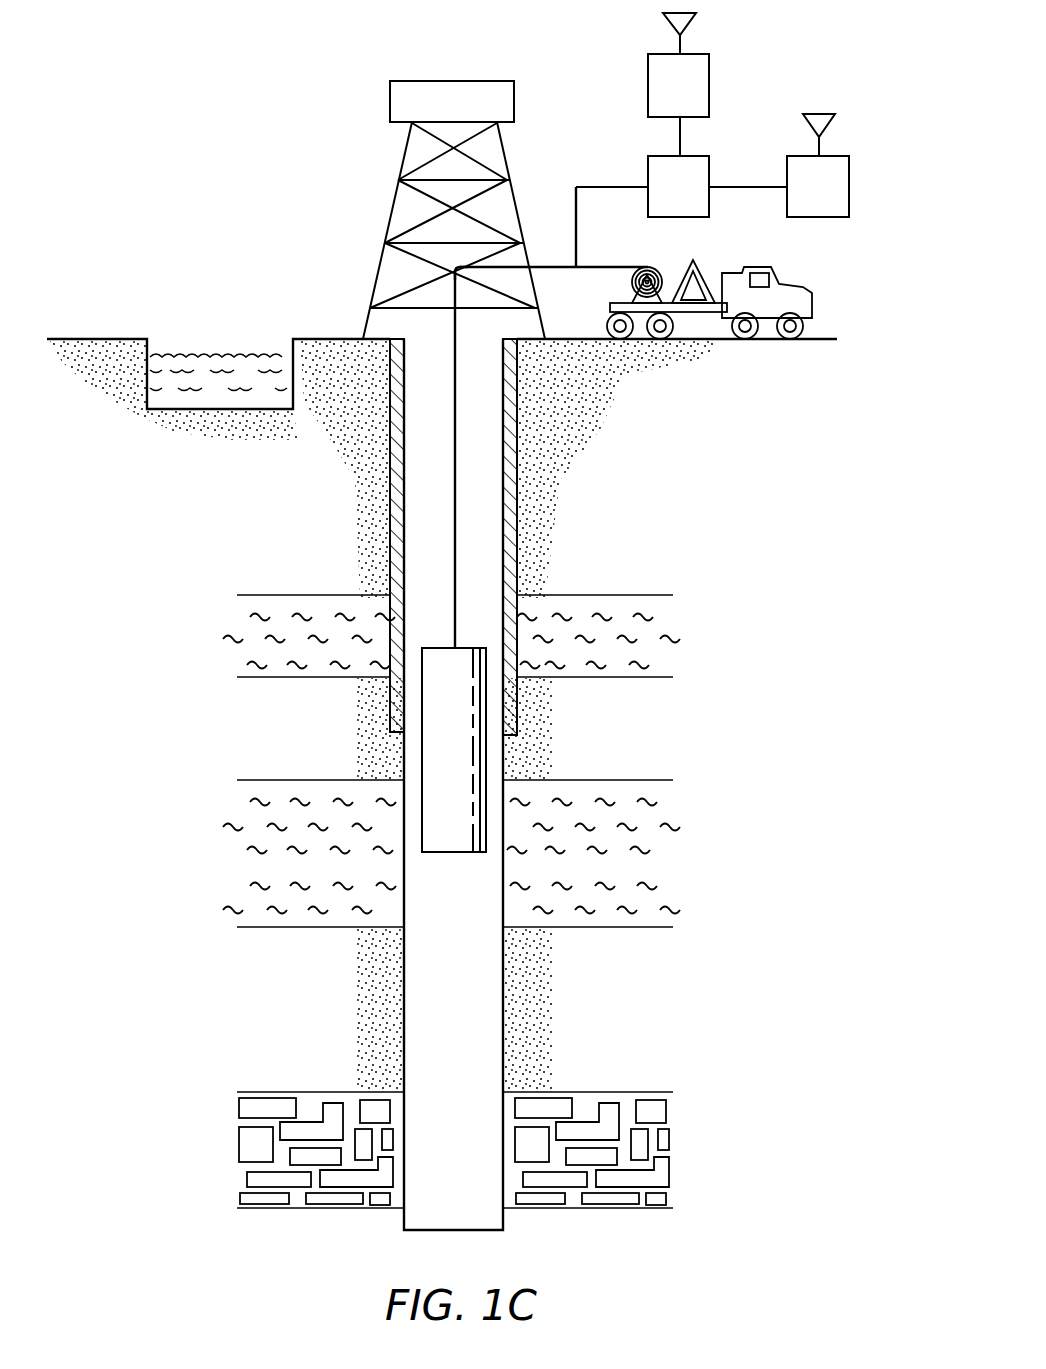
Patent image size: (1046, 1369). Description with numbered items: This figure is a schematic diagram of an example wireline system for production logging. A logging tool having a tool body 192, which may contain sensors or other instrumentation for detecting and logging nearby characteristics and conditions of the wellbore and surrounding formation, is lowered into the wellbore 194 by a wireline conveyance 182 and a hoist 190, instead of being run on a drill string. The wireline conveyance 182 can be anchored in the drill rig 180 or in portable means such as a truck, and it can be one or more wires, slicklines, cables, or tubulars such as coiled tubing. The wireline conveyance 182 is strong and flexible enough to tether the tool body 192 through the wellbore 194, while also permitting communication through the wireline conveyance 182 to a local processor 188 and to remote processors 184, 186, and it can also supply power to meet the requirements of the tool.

The drill rig 180 is at (520, 140).
The wireline conveyance 182 is at (617, 262).
The remote processor 184 is at (648, 65).
The remote processor 186 is at (820, 218).
The local processor 188 is at (702, 157).
The hoist 190 is at (455, 268).
The tool body 192 is at (438, 735).
The wellbore 194 is at (500, 1005).